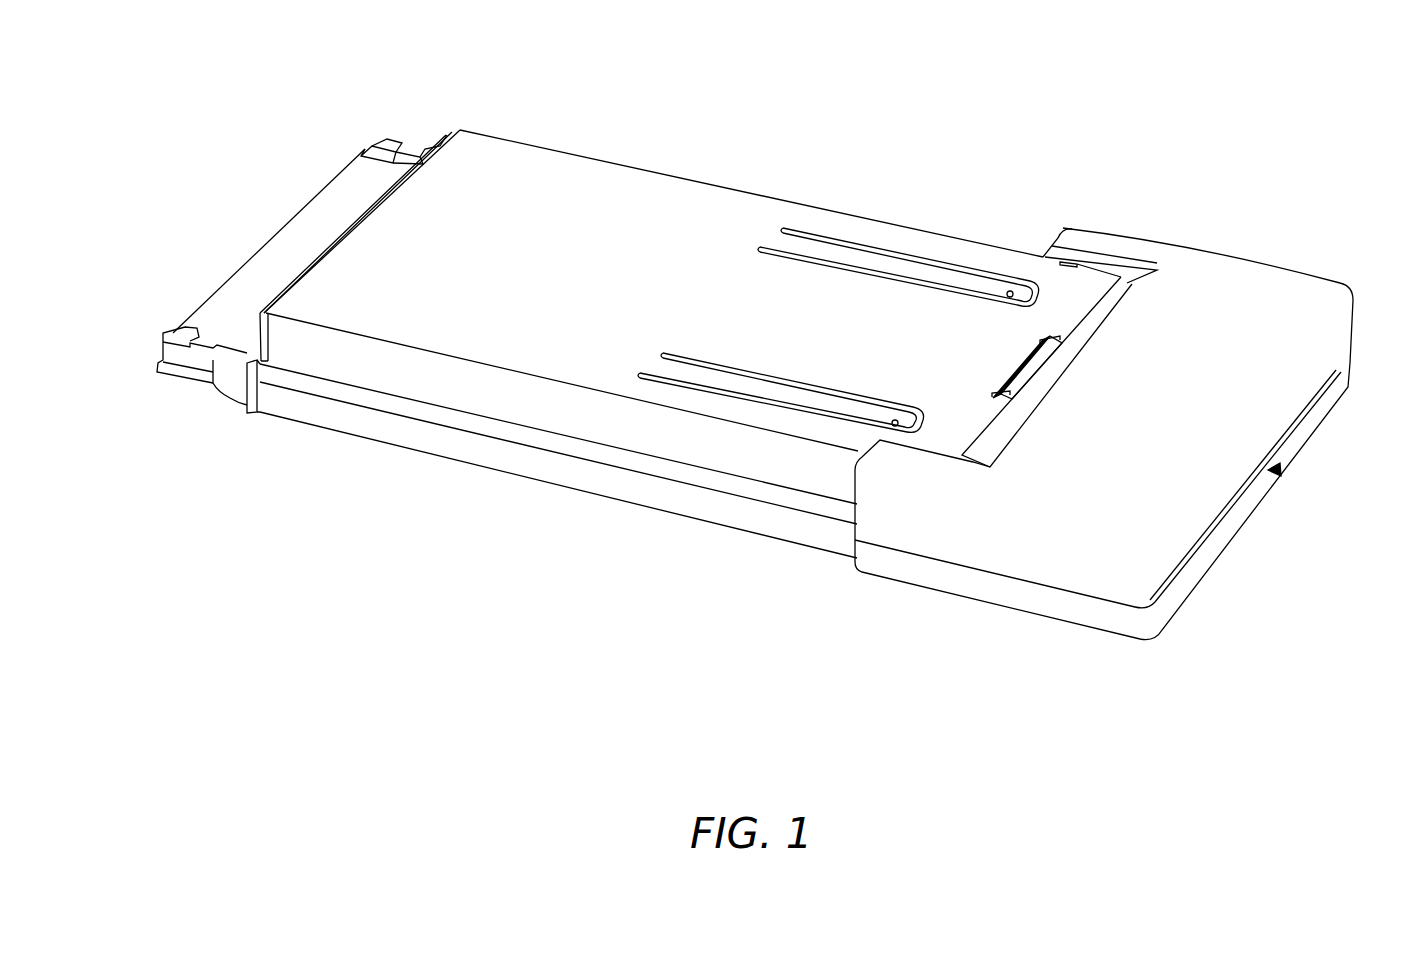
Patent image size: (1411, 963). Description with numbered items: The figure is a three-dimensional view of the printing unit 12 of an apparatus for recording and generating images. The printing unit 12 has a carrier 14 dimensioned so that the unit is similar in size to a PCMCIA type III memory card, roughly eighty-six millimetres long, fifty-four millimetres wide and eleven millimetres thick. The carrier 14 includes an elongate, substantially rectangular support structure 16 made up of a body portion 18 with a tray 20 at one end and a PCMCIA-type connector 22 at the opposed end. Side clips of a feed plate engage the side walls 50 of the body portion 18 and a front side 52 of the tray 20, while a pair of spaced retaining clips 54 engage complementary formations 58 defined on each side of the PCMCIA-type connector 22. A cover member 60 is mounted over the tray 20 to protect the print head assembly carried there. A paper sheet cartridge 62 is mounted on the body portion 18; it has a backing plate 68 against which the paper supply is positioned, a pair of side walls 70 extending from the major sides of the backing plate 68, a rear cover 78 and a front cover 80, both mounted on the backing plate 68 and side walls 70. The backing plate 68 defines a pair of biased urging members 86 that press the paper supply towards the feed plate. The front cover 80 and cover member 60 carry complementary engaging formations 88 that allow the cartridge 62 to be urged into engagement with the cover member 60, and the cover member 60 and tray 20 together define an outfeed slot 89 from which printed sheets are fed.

The printing unit 12 is at (920, 118).
The carrier 14 is at (628, 355).
The support structure 16 is at (290, 412).
The body portion 18 is at (750, 520).
The tray 20 is at (1053, 610).
The PCMCIA-type connector 22 is at (252, 236).
The side walls 50 is at (378, 430).
The front side 52 is at (1317, 417).
The retaining clips 54 is at (360, 152).
The complementary formations 58 is at (387, 143).
The cover member 60 is at (1130, 458).
The paper sheet cartridge 62 is at (613, 180).
The backing plate 68 is at (569, 250).
The side walls 70 is at (368, 375).
The rear cover 78 is at (357, 217).
The front cover 80 is at (1130, 265).
The urging members 86 is at (888, 263).
The engaging formations 88 is at (1040, 367).
The outfeed slot 89 is at (1277, 467).